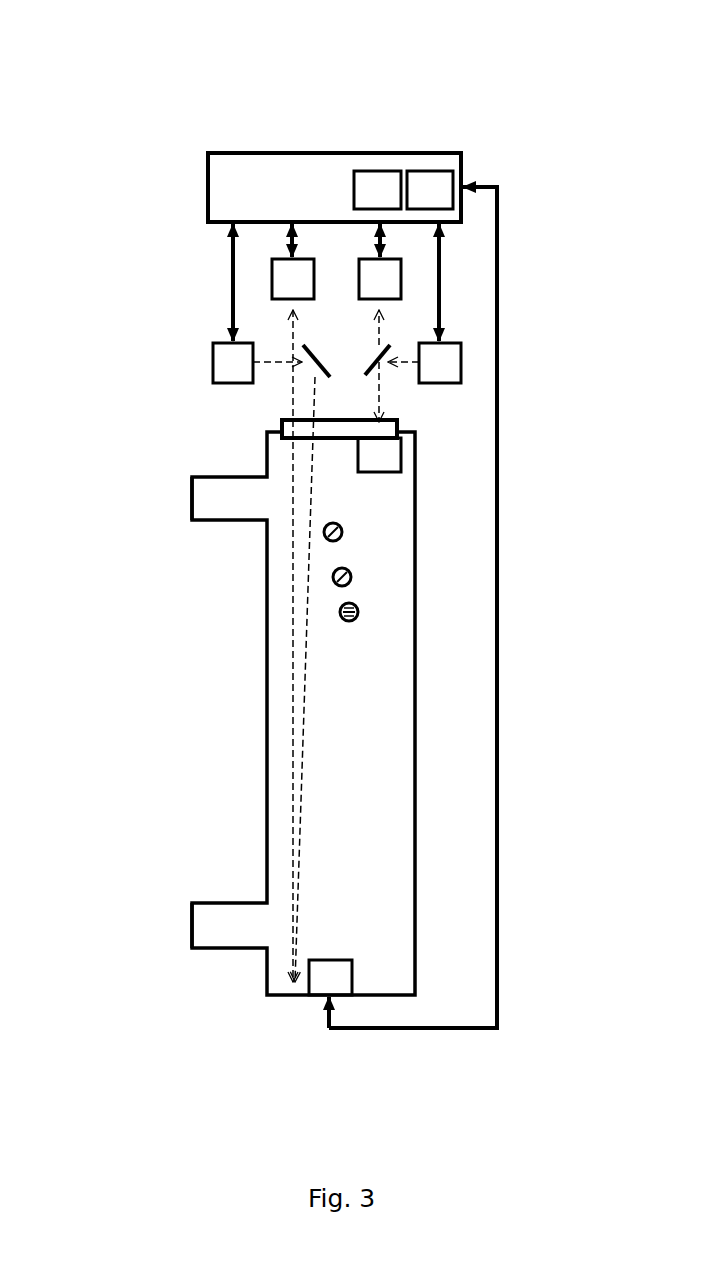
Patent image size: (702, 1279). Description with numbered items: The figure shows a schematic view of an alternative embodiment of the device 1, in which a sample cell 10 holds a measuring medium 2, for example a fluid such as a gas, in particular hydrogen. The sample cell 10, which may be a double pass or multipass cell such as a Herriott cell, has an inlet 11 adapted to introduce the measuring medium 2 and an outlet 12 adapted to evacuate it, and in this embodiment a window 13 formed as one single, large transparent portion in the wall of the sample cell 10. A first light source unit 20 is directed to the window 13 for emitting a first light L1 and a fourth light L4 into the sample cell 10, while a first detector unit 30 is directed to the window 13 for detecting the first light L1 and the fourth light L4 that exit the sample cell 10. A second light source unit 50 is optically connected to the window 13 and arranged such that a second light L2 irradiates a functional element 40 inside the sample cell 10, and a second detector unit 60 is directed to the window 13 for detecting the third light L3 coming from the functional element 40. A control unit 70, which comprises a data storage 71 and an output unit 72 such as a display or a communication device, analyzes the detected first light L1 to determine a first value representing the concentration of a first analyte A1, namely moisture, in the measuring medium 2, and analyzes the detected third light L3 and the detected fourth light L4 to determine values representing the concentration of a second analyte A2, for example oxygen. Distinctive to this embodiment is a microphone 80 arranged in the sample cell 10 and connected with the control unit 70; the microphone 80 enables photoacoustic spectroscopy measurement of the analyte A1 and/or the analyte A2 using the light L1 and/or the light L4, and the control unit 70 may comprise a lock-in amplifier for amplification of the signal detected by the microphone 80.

The device 1 is at (92, 92).
The measuring medium 2 is at (348, 697).
The sample cell 10 is at (276, 713).
The inlet 11 is at (192, 500).
The outlet 12 is at (192, 912).
The window 13 is at (268, 445).
The first light source unit 20 is at (248, 376).
The first detector unit 30 is at (308, 292).
The functional element 40 is at (394, 469).
The second light source unit 50 is at (455, 376).
The second detector unit 60 is at (395, 292).
The control unit 70 is at (320, 203).
The data storage 71 is at (392, 201).
The output unit 72 is at (445, 201).
The microphone 80 is at (345, 991).
The first analyte A1 is at (358, 608).
The second analyte A2 is at (342, 532).
The first light L1 is at (290, 320).
The second light L2 is at (403, 365).
The third light L3 is at (383, 322).
The fourth light L4 is at (305, 679).